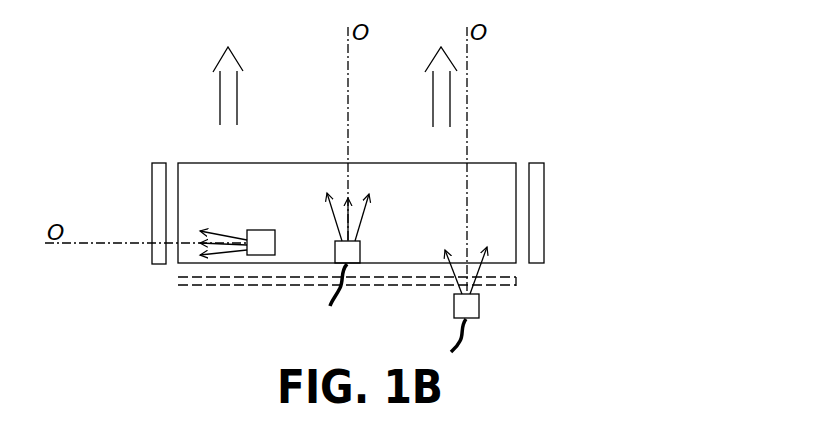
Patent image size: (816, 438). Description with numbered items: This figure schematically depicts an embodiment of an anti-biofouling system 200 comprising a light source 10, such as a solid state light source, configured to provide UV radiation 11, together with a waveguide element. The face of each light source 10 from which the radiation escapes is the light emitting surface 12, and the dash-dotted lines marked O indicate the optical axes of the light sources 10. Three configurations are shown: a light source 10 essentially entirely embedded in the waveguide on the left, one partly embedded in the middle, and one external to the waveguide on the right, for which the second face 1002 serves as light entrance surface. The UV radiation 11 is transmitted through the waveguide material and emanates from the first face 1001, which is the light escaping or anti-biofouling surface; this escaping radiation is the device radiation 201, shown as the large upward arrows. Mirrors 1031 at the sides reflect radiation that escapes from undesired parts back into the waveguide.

The light source 10 is at (268, 213).
The UV radiation 11 is at (215, 232).
The light emitting surface 12 is at (243, 253).
The anti-biofouling system 200 is at (636, 293).
The device radiation 201 is at (228, 97).
The first face 1001 is at (501, 162).
The second face 1002 is at (495, 265).
The mirror 1031 is at (150, 258).